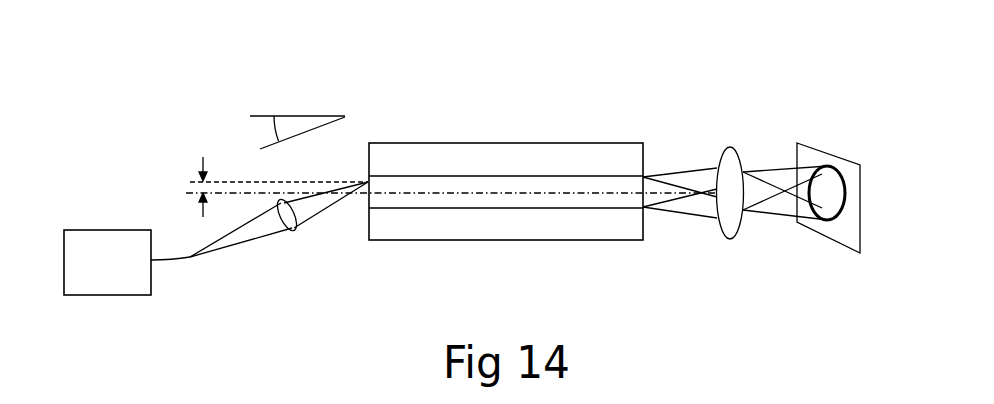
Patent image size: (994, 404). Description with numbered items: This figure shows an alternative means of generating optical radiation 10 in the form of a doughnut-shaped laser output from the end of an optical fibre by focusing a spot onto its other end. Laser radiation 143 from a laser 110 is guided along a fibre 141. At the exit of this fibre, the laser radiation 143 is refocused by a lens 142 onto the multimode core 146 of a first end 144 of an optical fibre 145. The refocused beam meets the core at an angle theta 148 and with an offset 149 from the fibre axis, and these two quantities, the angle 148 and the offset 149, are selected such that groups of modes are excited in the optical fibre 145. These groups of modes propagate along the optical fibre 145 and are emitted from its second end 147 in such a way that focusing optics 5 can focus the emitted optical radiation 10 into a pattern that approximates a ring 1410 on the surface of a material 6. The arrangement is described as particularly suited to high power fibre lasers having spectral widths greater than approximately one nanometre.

The laser 110 is at (122, 295).
The fibre 141 is at (182, 259).
The lens 142 is at (297, 231).
The laser radiation 143 is at (260, 232).
The first end 144 is at (370, 220).
The optical fibre 145 is at (455, 143).
The multimode core 146 is at (567, 208).
The second end 147 is at (643, 235).
The angle θ 148 is at (288, 115).
The offset 149 is at (196, 178).
The focusing optics 5 is at (730, 146).
The material 6 is at (812, 150).
The optical radiation 10 is at (695, 213).
The ring 1410 is at (840, 218).